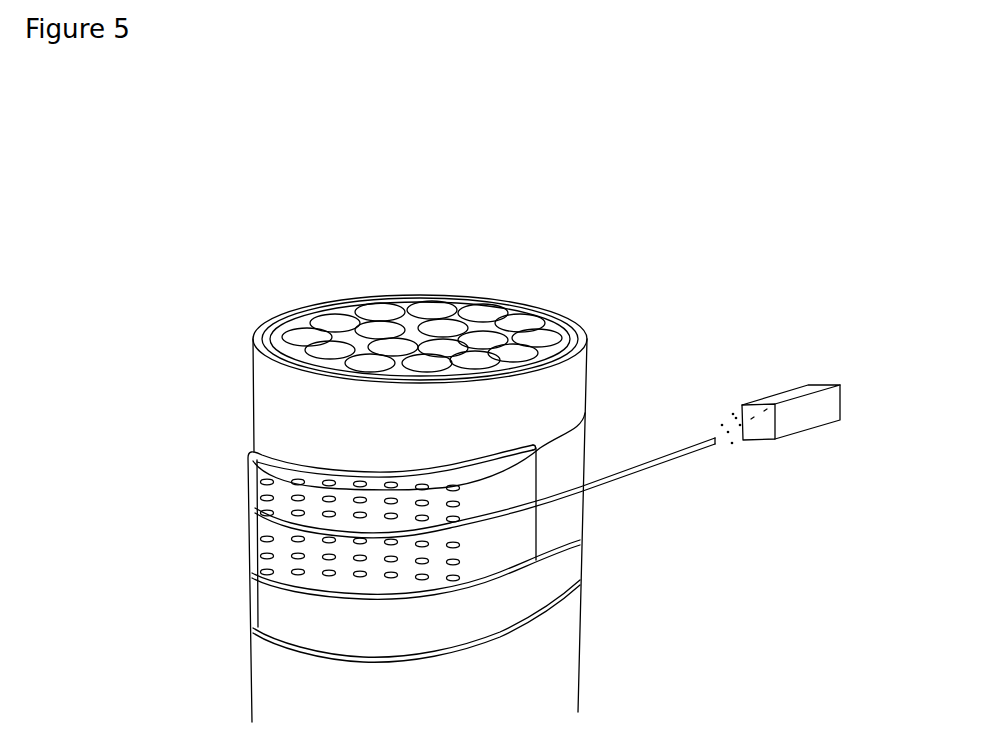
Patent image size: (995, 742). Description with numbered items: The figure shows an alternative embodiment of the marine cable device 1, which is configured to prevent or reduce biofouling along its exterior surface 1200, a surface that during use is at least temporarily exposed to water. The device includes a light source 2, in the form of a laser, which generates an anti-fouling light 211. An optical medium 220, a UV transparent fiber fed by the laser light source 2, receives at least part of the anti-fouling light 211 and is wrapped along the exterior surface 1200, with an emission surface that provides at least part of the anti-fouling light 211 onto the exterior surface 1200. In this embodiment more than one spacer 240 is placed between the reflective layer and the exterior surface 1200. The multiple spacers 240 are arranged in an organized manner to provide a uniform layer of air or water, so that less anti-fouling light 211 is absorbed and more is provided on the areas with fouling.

The marine cable device 1 is at (208, 263).
The exterior surface 1200 is at (253, 383).
The spacer 240 is at (387, 512).
The optical medium 220 is at (627, 470).
The anti-fouling light 211 is at (727, 450).
The light source 2 is at (840, 385).